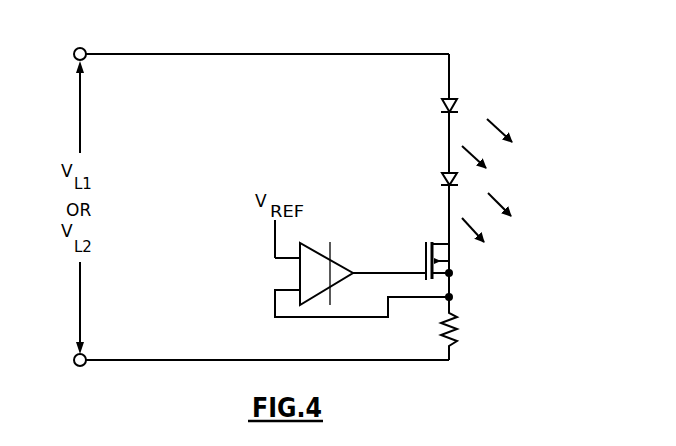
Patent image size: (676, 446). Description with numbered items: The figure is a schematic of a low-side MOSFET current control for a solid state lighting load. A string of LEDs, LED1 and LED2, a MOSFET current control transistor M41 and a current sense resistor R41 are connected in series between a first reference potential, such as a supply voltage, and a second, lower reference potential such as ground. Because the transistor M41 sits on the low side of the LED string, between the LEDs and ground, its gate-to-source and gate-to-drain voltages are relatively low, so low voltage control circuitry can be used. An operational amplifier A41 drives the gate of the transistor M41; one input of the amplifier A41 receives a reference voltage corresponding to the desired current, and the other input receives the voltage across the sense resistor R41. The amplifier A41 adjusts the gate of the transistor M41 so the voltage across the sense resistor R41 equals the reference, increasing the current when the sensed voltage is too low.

The LED LED1 is at (446, 133).
The LED LED2 is at (446, 207).
The current control transistor M41 is at (460, 271).
The current sense resistor R41 is at (468, 330).
The operational amplifier A41 is at (362, 268).